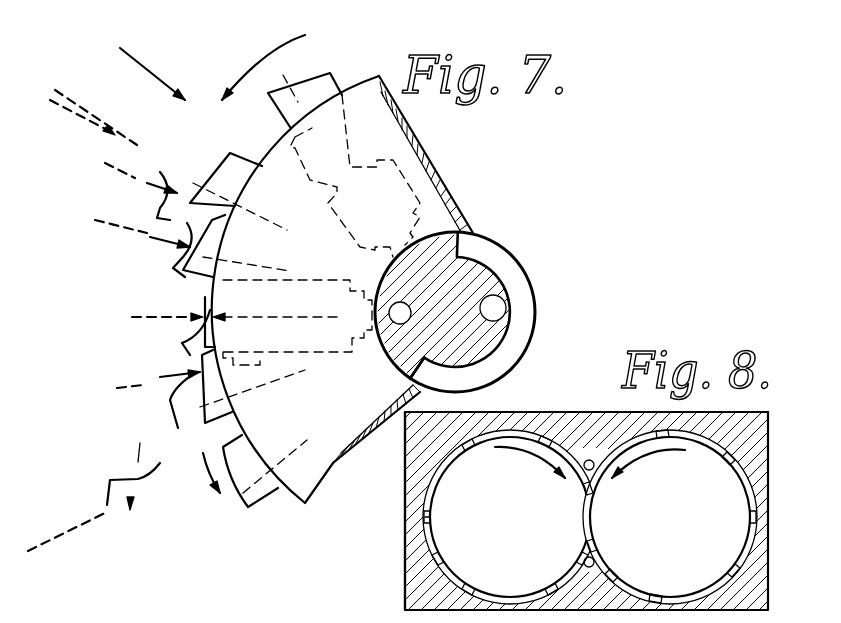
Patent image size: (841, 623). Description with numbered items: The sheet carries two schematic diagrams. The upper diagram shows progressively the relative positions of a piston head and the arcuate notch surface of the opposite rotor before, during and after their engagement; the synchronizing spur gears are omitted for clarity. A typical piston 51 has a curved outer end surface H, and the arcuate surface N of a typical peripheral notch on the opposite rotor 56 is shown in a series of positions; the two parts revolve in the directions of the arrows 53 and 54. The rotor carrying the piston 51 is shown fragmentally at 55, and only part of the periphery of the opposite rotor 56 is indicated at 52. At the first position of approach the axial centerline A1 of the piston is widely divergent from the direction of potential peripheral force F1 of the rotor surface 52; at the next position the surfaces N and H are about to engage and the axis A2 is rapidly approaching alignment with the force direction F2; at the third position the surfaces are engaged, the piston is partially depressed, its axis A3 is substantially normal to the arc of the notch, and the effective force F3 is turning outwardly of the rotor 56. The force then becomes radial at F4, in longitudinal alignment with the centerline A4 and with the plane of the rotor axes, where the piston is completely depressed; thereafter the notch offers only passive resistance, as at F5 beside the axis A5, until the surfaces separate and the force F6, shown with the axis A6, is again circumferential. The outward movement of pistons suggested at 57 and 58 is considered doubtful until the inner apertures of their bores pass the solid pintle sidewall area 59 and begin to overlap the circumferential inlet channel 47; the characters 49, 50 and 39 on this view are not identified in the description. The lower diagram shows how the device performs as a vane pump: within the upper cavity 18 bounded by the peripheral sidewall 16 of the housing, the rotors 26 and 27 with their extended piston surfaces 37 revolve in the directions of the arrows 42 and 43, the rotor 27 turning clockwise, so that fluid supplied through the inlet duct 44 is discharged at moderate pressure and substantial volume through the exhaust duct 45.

In FIG. 7, the rotor 55 is at (443, 183).
In FIG. 7, the circumferential inlet channel 47 is at (488, 245).
In FIG. 7, the pivot pin 49 is at (387, 300).
In FIG. 7, the pivot pin 50 is at (405, 317).
In FIG. 7, the solid sidewall area of the pintle 59 is at (395, 367).
In FIG. 7, the piston 51 is at (320, 88).
In FIG. 7, the curved outer end surface of the piston H is at (205, 170).
In FIG. 7, the arcuate surface of the peripheral notch N is at (165, 175).
In FIG. 7, the periphery of the opposite rotor 52 is at (96, 108).
In FIG. 7, the arrow 53 is at (276, 58).
In FIG. 7, the arrow 54 is at (136, 62).
In FIG. 7, the opposite rotor 56 is at (42, 269).
In FIG. 7, the outward piston movement 57 is at (217, 410).
In FIG. 7, the outward piston movement 58 is at (263, 503).
In FIG. 7, the axial centerline of the piston A1 is at (330, 124).
In FIG. 7, the axial centerline of the piston A2 is at (254, 218).
In FIG. 7, the axial centerline of the piston A3 is at (233, 262).
In FIG. 7, the axial centerline of the piston A4 is at (262, 312).
In FIG. 7, the axial centerline of the piston A5 is at (245, 378).
In FIG. 7, the axial centerline of the piston A6 is at (275, 440).
In FIG. 7, the direction of potential peripheral force F1 is at (82, 116).
In FIG. 7, the direction of potential force F2 is at (125, 173).
In FIG. 7, the direction of effective force F3 is at (145, 237).
In FIG. 7, the direction of effective force F4 is at (172, 316).
In FIG. 7, the direction of passive resistance F5 is at (156, 384).
In FIG. 7, the direction of potential force F6 is at (137, 452).
In FIG. 8, the housing block 39 is at (586, 497).
In FIG. 8, the rotor assembly 27 is at (510, 517).
In FIG. 8, the rotor assembly 26 is at (670, 517).
In FIG. 8, the extended piston surfaces 37 is at (472, 590).
In FIG. 8, the arrow 43 is at (511, 462).
In FIG. 8, the arrow 42 is at (663, 462).
In FIG. 8, the exhaust duct 45 is at (590, 459).
In FIG. 8, the inlet duct 44 is at (595, 560).
In FIG. 8, the peripheral sidewall 16 is at (413, 563).
In FIG. 8, the upper cavity 18 is at (425, 517).